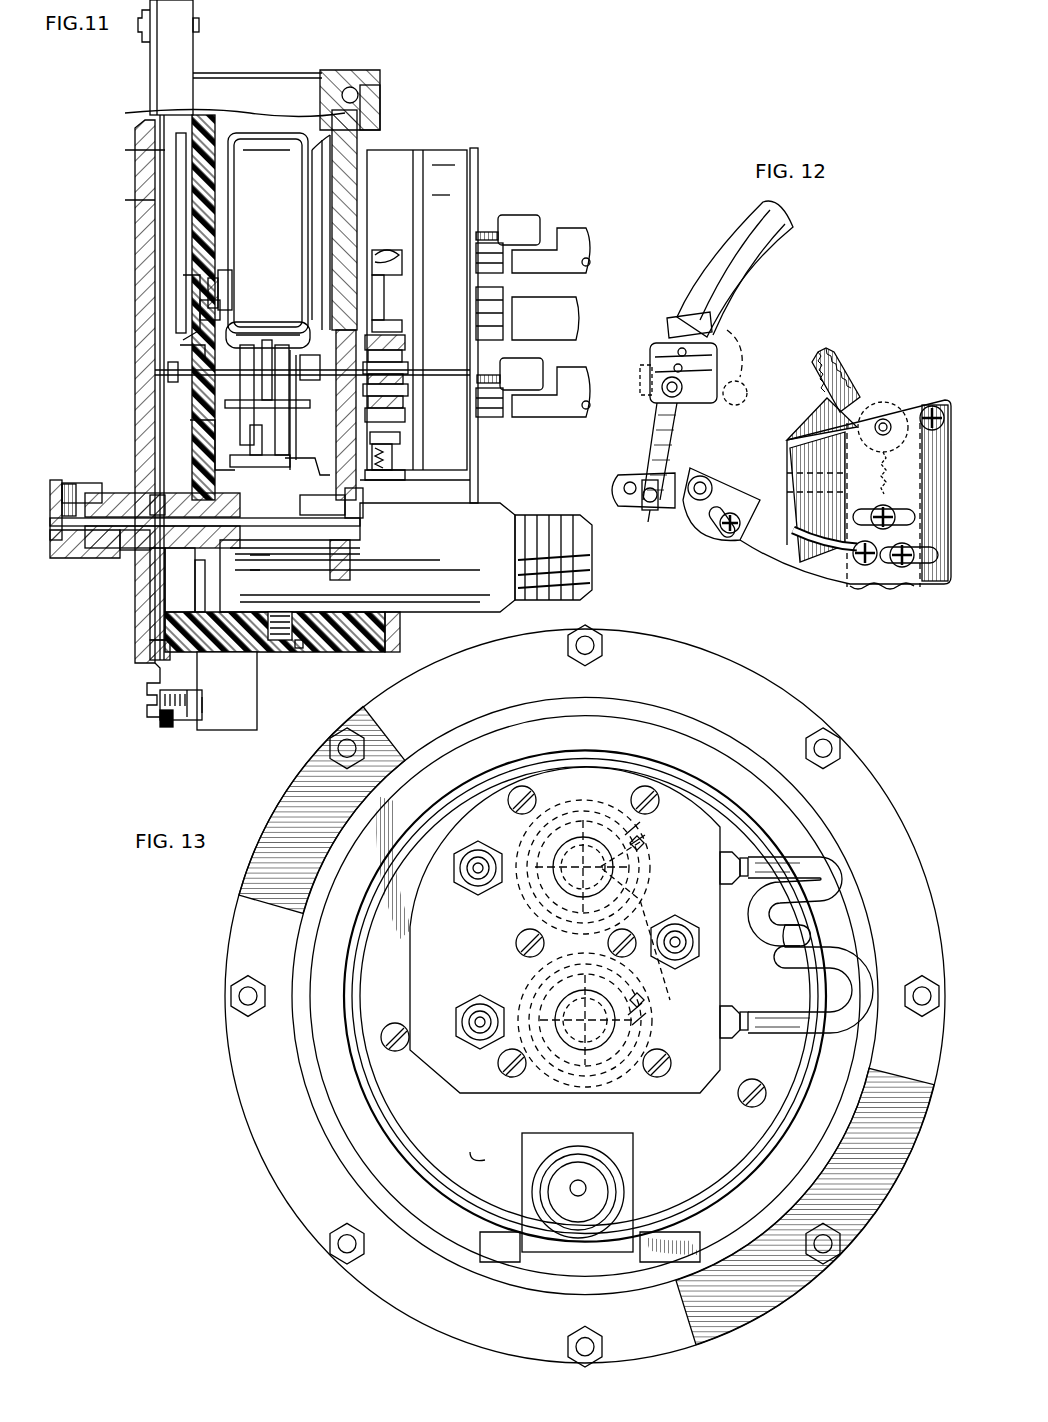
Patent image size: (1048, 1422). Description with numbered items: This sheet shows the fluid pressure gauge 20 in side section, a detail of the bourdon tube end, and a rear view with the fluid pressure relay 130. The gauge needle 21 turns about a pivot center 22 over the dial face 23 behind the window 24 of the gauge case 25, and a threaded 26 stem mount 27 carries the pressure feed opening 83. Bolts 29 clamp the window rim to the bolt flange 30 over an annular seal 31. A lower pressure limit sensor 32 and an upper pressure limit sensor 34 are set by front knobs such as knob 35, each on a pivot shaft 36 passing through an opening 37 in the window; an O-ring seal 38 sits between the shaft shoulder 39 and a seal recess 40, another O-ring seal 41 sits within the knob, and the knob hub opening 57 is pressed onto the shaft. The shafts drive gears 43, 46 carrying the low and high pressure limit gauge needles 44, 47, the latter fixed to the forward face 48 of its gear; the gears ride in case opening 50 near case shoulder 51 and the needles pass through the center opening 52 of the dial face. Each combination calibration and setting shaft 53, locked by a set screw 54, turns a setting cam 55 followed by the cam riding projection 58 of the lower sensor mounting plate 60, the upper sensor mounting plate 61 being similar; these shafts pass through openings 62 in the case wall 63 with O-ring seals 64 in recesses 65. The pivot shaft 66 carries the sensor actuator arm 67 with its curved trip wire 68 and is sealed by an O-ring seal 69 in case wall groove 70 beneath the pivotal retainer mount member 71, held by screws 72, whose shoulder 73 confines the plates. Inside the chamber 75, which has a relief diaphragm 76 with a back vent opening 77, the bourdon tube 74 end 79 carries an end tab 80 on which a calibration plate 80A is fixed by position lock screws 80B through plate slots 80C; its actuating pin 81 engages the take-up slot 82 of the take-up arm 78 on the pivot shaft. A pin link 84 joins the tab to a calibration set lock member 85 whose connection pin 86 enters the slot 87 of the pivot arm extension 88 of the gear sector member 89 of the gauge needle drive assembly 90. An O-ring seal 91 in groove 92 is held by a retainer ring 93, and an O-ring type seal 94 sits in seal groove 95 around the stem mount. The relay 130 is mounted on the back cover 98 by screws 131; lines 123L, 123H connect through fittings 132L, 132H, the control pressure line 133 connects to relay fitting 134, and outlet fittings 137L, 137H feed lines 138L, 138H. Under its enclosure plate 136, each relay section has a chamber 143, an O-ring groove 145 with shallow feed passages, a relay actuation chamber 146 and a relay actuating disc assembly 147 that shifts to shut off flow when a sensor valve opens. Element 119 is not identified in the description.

In FIG. 11, the fluid pressure gauge 20 is at (322, 48).
In FIG. 13, the fluid pressure gauge 20 is at (795, 678).
In FIG. 11, the gauge needle 21 is at (150, 113).
In FIG. 11, the pivot center 22 is at (185, 378).
In FIG. 11, the dial face 23 is at (185, 118).
In FIG. 11, the window 24 is at (135, 210).
In FIG. 11, the gauge case 25 is at (265, 73).
In FIG. 13, the gauge case 25 is at (705, 720).
In FIG. 11, the threaded portion 26 is at (560, 600).
In FIG. 13, the threaded portion 26 is at (622, 1185).
In FIG. 11, the stem mount 27 is at (588, 560).
In FIG. 13, the stem mount 27 is at (555, 1250).
In FIG. 11, the bolts 29 is at (140, 42).
In FIG. 13, the bolts 29 is at (568, 653).
In FIG. 11, the bolt flange 30 is at (175, 722).
In FIG. 13, the bolt flange 30 is at (815, 712).
In FIG. 11, the annular seal 31 is at (150, 650).
In FIG. 11, the lower pressure limit sensor 32 is at (395, 452).
In FIG. 11, the upper pressure limit sensor 34 is at (395, 250).
In FIG. 11, the upper pressure limit sensor setting adjustment knob 35 is at (56, 490).
In FIG. 11, the pivot shaft 36 is at (100, 560).
In FIG. 11, the opening 37 is at (152, 575).
In FIG. 11, the O-ring seal 38 is at (158, 500).
In FIG. 11, the shoulder 39 is at (168, 555).
In FIG. 11, the seal recess 40 is at (195, 590).
In FIG. 11, the O-ring seal 41 is at (108, 492).
In FIG. 11, the gear 43 is at (232, 285).
In FIG. 11, the low pressure limit gauge needle 44 is at (190, 296).
In FIG. 11, the gear 46 is at (236, 300).
In FIG. 11, the high pressure limit gauge needle 47 is at (178, 150).
In FIG. 11, the forward face 48 is at (205, 340).
In FIG. 11, the case opening 50 is at (222, 290).
In FIG. 11, the case shoulder 51 is at (222, 312).
In FIG. 11, the center opening 52 is at (190, 420).
In FIG. 11, the combination calibration and setting shaft 53 is at (251, 558).
In FIG. 11, the set screw 54 is at (70, 484).
In FIG. 11, the setting cam 55 is at (370, 520).
In FIG. 11, the hub opening 57 is at (135, 550).
In FIG. 11, the cam riding projection 58 is at (410, 478).
In FIG. 11, the lower sensor mounting plate 60 is at (405, 472).
In FIG. 11, the upper sensor mounting plate 61 is at (376, 275).
In FIG. 11, the openings 62 is at (330, 530).
In FIG. 11, the case wall 63 is at (350, 560).
In FIG. 11, the O-ring seals 64 is at (350, 503).
In FIG. 11, the recesses 65 is at (340, 545).
In FIG. 11, the pivot shaft 66 is at (406, 384).
In FIG. 12, the pivot shaft 66 is at (738, 390).
In FIG. 11, the sensor actuator arm 67 is at (404, 375).
In FIG. 11, the curved trip wire 68 is at (396, 365).
In FIG. 11, the O-ring seal 69 is at (404, 398).
In FIG. 11, the case wall groove 70 is at (400, 410).
In FIG. 11, the pivotal retainer mount member 71 is at (392, 340).
In FIG. 11, the screws 72 is at (398, 356).
In FIG. 11, the shoulder 73 is at (388, 325).
In FIG. 11, the bourdon tube 74 is at (235, 130).
In FIG. 12, the bourdon tube 74 is at (793, 227).
In FIG. 11, the chamber 75 is at (265, 135).
In FIG. 11, the relief diaphragm 76 is at (318, 175).
In FIG. 11, the back vent opening 77 is at (345, 132).
In FIG. 11, the take-up arm 78 is at (300, 385).
In FIG. 12, the take-up arm 78 is at (730, 340).
In FIG. 12, the bourdon tube end 79 is at (702, 330).
In FIG. 11, the end tab 80 is at (258, 345).
In FIG. 12, the end tab 80 is at (680, 350).
In FIG. 11, the calibration plate 80A is at (296, 320).
In FIG. 12, the calibration plate 80A is at (725, 403).
In FIG. 12, the position lock screws 80B is at (710, 335).
In FIG. 12, the plate slots 80C is at (667, 326).
In FIG. 11, the sensor drive actuating pin 81 is at (305, 440).
In FIG. 12, the sensor drive actuating pin 81 is at (640, 380).
In FIG. 12, the take-up slot 82 is at (712, 400).
In FIG. 13, the pressure feed opening 83 is at (570, 1190).
In FIG. 12, the pin link 84 is at (655, 430).
In FIG. 12, the calibration set lock member 85 is at (646, 515).
In FIG. 12, the connection pin 86 is at (665, 480).
In FIG. 12, the slot 87 is at (630, 482).
In FIG. 12, the pivot arm extension 88 is at (614, 485).
In FIG. 12, the gear sector member 89 is at (790, 420).
In FIG. 11, the gauge needle drive assembly 90 is at (260, 505).
In FIG. 12, the gauge needle drive assembly 90 is at (852, 335).
In FIG. 11, the O-ring seal 91 is at (352, 85).
In FIG. 11, the groove 92 is at (340, 97).
In FIG. 11, the retainer ring 93 is at (382, 85).
In FIG. 11, the O-ring type seal 94 is at (350, 640).
In FIG. 11, the seal groove 95 is at (350, 652).
In FIG. 13, the back cover 98 is at (474, 1146).
In FIG. 11, the spring 119 is at (380, 250).
In FIG. 13, the line 123H is at (830, 860).
In FIG. 13, the line 123L is at (835, 985).
In FIG. 11, the fluid pressure relay 130 is at (485, 160).
In FIG. 13, the fluid pressure relay 130 is at (462, 1090).
In FIG. 13, the screws 131 is at (535, 795).
In FIG. 13, the fitting 132H is at (748, 860).
In FIG. 13, the fitting 132L is at (740, 1020).
In FIG. 11, the control pressure line 133 is at (578, 300).
In FIG. 13, the control pressure line 133 is at (680, 925).
In FIG. 11, the relay fitting 134 is at (514, 322).
In FIG. 13, the relay fitting 134 is at (702, 948).
In FIG. 11, the enclosure plate 136 is at (475, 160).
In FIG. 11, the outlet fitting 137H is at (515, 245).
In FIG. 13, the outlet fitting 137H is at (450, 880).
In FIG. 11, the outlet fitting 137L is at (517, 400).
In FIG. 13, the outlet fitting 137L is at (460, 1045).
In FIG. 11, the line 138H is at (580, 230).
In FIG. 13, the line 138H is at (470, 890).
In FIG. 11, the line 138L is at (565, 375).
In FIG. 13, the line 138L is at (458, 1015).
In FIG. 13, the chamber 143 is at (640, 830).
In FIG. 13, the O-ring groove 145 is at (570, 1100).
In FIG. 13, the relay actuation chamber 146 is at (525, 835).
In FIG. 13, the relay actuating disc assembly 147 is at (648, 842).